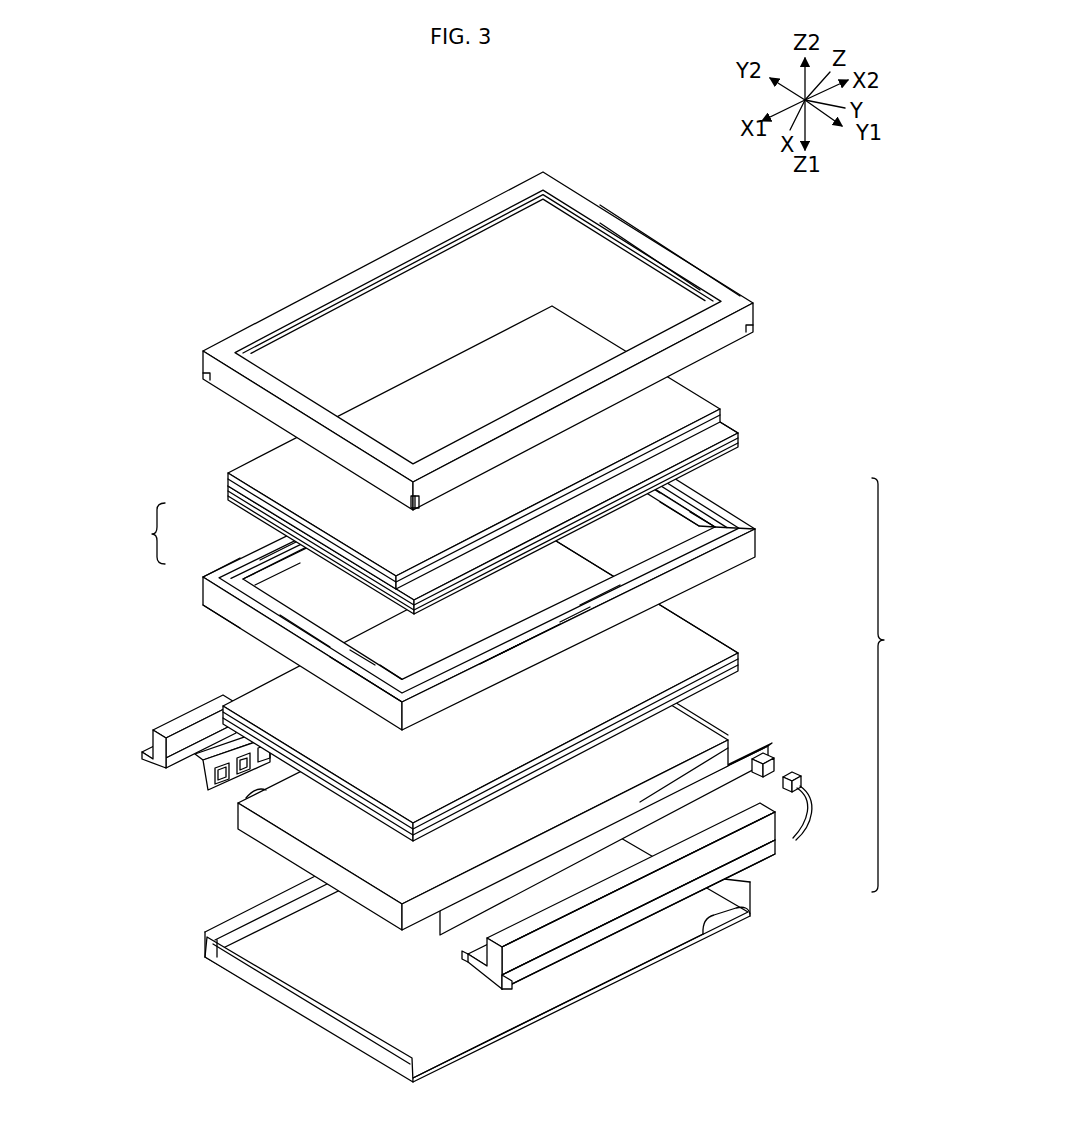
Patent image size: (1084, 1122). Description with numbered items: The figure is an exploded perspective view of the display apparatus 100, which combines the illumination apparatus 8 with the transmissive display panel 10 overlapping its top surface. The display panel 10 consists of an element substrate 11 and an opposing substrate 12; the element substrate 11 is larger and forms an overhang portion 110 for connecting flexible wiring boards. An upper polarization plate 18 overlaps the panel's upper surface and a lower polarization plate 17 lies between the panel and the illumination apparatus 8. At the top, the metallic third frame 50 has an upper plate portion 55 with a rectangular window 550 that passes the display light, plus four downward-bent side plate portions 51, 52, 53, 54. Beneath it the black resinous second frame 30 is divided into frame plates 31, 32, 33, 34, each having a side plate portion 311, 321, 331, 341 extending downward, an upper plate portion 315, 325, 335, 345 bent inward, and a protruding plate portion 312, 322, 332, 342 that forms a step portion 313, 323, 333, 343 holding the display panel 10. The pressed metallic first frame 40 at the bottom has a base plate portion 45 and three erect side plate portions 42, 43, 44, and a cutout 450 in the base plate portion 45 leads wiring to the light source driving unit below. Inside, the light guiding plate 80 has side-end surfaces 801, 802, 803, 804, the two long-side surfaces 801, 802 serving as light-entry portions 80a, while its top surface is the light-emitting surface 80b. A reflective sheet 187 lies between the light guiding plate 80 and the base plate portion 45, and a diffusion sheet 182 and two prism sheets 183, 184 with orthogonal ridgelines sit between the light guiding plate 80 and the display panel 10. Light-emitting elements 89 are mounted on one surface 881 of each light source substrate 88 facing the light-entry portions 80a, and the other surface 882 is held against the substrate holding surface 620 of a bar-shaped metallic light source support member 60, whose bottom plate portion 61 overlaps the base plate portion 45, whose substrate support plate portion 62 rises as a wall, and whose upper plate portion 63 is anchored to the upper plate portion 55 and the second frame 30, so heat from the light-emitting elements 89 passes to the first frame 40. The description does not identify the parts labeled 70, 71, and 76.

The display apparatus 100 is at (430, 99).
The illumination apparatus 8 is at (887, 685).
The display panel 10 is at (431, 524).
The element substrate 11 is at (232, 524).
The opposing substrate 12 is at (232, 543).
The lower polarization plate 17 is at (526, 466).
The upper polarization plate 18 is at (683, 400).
The overhang portion 110 is at (737, 431).
The second frame 30 is at (488, 593).
The frame plate 31 is at (592, 629).
The frame plate 32 is at (265, 572).
The frame plate 33 is at (328, 679).
The frame plate 34 is at (715, 519).
The side plate portion 311 is at (535, 655).
The protruding plate portion 312 is at (500, 643).
The step portion 313 is at (570, 618).
The upper plate portion 315 is at (590, 610).
The side plate portion 321 is at (272, 590).
The protruding plate portion 322 is at (232, 614).
The step portion 323 is at (215, 580).
The upper plate portion 325 is at (280, 550).
The side plate portion 331 is at (382, 728).
The protruding plate portion 332 is at (395, 672).
The step portion 333 is at (368, 660).
The upper plate portion 335 is at (300, 660).
The side plate portion 341 is at (735, 528).
The protruding plate portion 342 is at (668, 500).
The step portion 343 is at (705, 510).
The upper plate portion 345 is at (762, 512).
The first frame 40 is at (495, 936).
The side plate portion 42 is at (240, 920).
The side plate portion 43 is at (237, 965).
The side plate portion 44 is at (745, 874).
The base plate portion 45 is at (315, 975).
The cutout 450 is at (728, 932).
The third frame 50 is at (464, 308).
The side plate portion 51 is at (731, 336).
The side plate portion 52 is at (437, 255).
The side plate portion 53 is at (232, 390).
The side plate portion 54 is at (657, 273).
The upper plate portion 55 is at (678, 264).
The window 550 is at (625, 233).
The light source support member 60 is at (419, 893).
The bottom plate portion 61 is at (640, 885).
The substrate support plate portion 62 is at (492, 968).
The upper plate portion 63 is at (590, 910).
The substrate holding surface 620 is at (470, 962).
The light source unit 70 is at (805, 772).
The light emitting element 71 is at (772, 758).
The thermistor 76 is at (803, 778).
The light guiding plate 80 is at (509, 707).
The light-entry portions 80a is at (449, 866).
The light-emitting surface 80b is at (655, 742).
The side-end surface 801 is at (420, 902).
The side-end surface 802 is at (449, 782).
The side-end surface 803 is at (283, 850).
The side-end surface 804 is at (713, 722).
The light source substrate 88 is at (482, 739).
The one surface 881 is at (216, 772).
The another surface 882 is at (242, 760).
The light-emitting elements 89 is at (262, 752).
The diffusion sheet 182 is at (421, 840).
The prism sheet 183 is at (472, 815).
The prism sheet 184 is at (499, 795).
The reflective sheet 187 is at (498, 784).